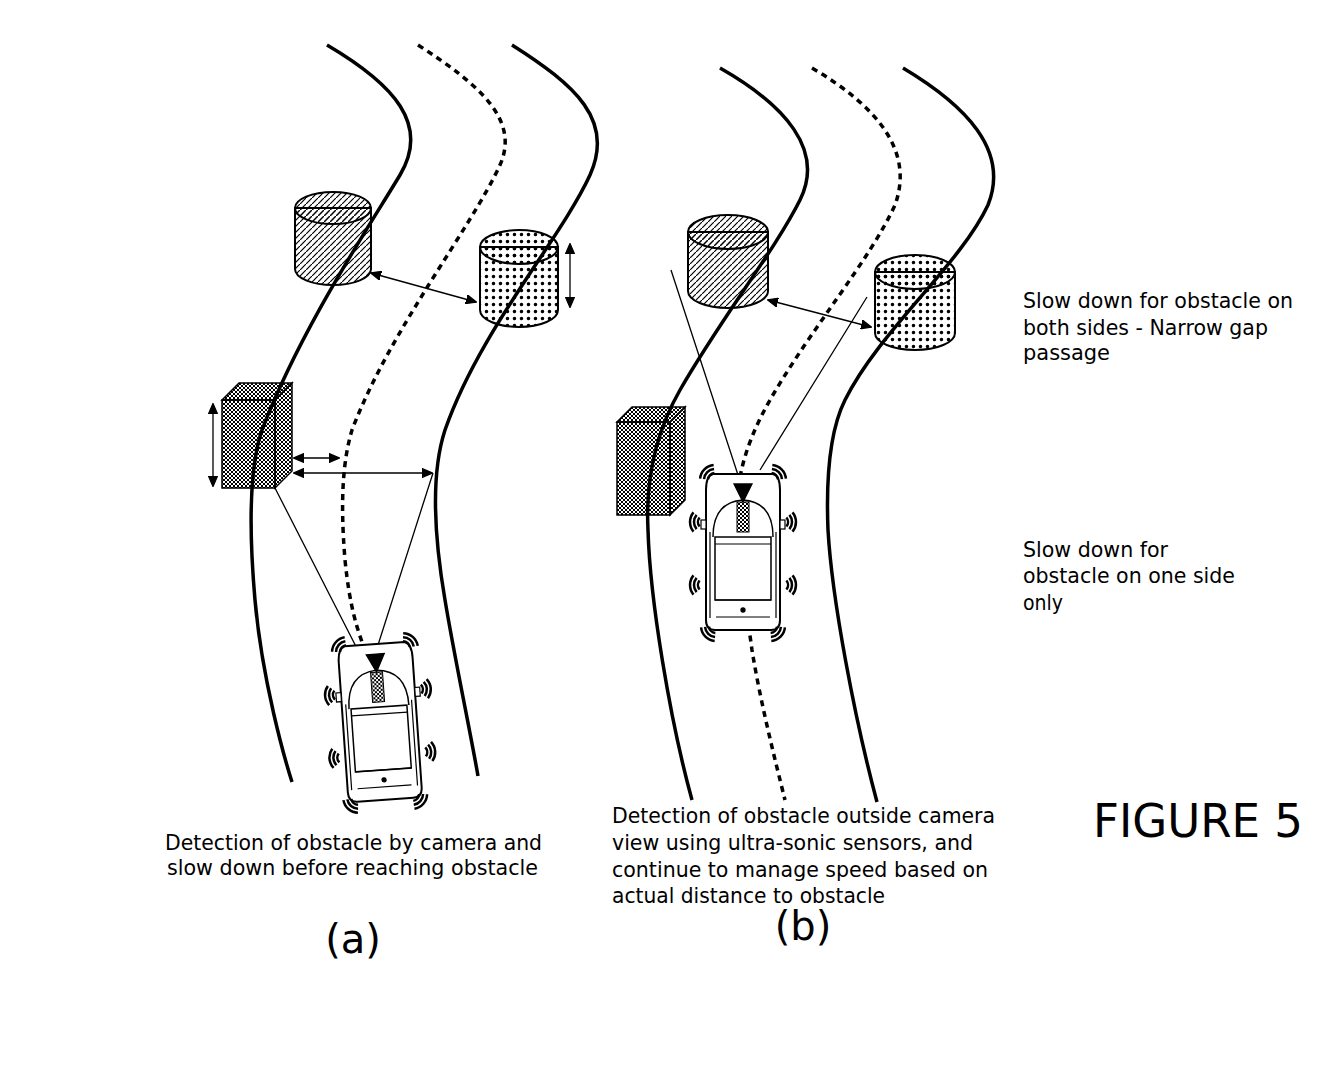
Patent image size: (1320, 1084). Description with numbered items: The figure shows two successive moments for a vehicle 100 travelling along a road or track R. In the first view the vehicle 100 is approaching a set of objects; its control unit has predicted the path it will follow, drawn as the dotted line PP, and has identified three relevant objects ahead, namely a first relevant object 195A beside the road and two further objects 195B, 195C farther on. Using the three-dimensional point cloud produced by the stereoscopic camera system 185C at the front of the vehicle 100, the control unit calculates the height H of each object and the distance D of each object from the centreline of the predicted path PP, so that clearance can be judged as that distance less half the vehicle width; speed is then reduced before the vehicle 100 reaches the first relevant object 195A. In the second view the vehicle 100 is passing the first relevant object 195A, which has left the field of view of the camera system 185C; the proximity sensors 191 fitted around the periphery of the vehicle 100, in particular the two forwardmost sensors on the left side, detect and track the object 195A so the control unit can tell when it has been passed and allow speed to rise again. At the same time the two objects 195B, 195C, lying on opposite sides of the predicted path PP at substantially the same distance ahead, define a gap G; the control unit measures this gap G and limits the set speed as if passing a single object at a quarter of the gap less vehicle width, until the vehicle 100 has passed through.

The vehicle 100 is at (240, 717).
The stereoscopic camera system 185C is at (368, 672).
The proximity sensors 191 is at (360, 797).
The first relevant object 195A is at (230, 393).
The relevant object 195B is at (293, 238).
The relevant object 195C is at (533, 232).
The predicted path PP is at (378, 350).
The road or track R is at (257, 562).
The height of relevant object H is at (197, 445).
The distance of object from centreline of predicted path D is at (363, 455).
The gap G is at (802, 303).